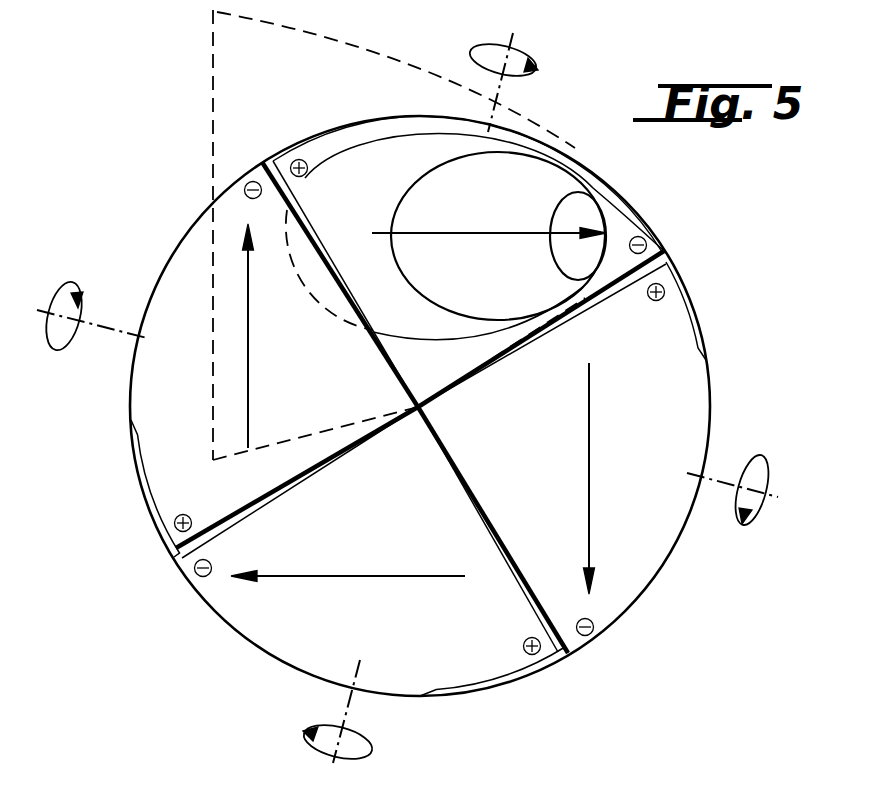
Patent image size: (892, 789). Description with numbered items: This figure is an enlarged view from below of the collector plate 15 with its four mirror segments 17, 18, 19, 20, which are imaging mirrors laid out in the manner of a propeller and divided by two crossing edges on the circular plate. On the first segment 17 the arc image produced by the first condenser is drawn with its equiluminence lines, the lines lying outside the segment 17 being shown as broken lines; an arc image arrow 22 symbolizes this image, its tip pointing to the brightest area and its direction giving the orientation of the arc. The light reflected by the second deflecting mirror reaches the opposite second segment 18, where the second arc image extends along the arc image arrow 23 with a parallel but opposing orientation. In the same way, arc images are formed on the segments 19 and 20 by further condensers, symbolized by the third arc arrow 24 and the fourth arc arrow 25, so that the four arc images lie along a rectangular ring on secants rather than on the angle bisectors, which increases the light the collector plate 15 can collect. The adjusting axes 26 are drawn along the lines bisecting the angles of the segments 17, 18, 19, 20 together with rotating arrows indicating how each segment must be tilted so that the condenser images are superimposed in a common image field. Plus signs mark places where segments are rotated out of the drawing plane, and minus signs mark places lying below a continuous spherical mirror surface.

The collector plate 15 is at (672, 601).
The first segment 17 is at (360, 176).
The second segment 18 is at (432, 677).
The third segment 19 is at (686, 368).
The fourth segment 20 is at (153, 428).
The arc image arrow 22 is at (460, 238).
The arc image arrow 23 is at (352, 576).
The third arc arrow 24 is at (591, 462).
The fourth arc arrow 25 is at (250, 347).
The adjusting axes 26 is at (498, 97).